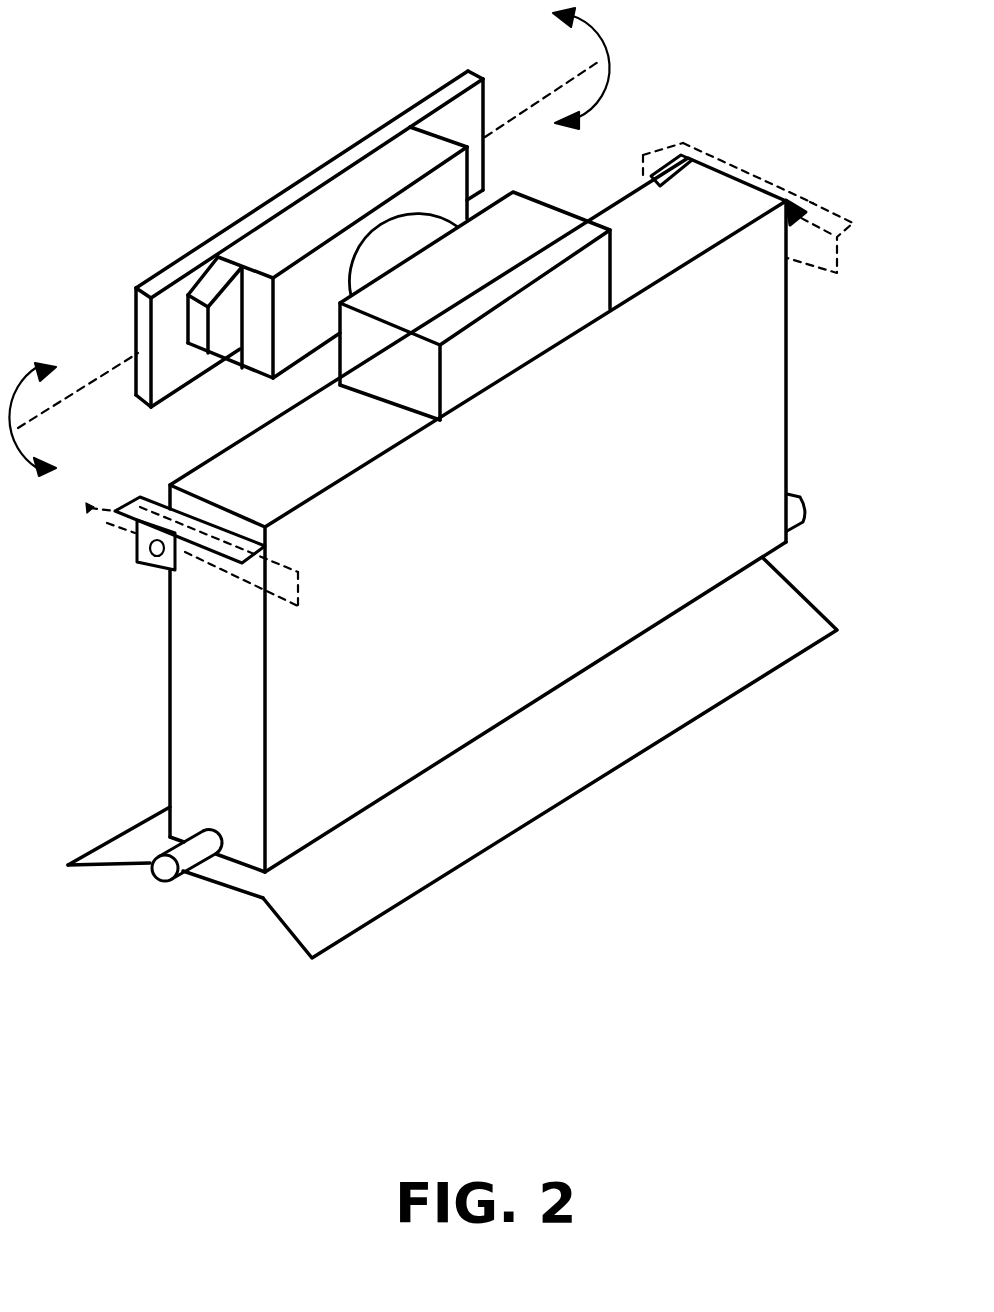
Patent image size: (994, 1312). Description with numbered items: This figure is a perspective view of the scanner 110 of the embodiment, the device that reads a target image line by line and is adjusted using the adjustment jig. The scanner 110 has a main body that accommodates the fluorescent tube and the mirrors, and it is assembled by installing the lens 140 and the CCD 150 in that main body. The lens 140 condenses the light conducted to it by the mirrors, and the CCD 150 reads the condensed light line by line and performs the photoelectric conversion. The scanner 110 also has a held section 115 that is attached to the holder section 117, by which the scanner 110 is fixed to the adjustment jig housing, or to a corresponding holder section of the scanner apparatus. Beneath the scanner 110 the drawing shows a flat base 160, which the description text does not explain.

The housing 110 is at (790, 377).
The hinge 115 is at (799, 200).
The bracket 117 is at (100, 505).
The block 140 is at (407, 228).
The plate 150 is at (290, 183).
The base 160 is at (291, 932).